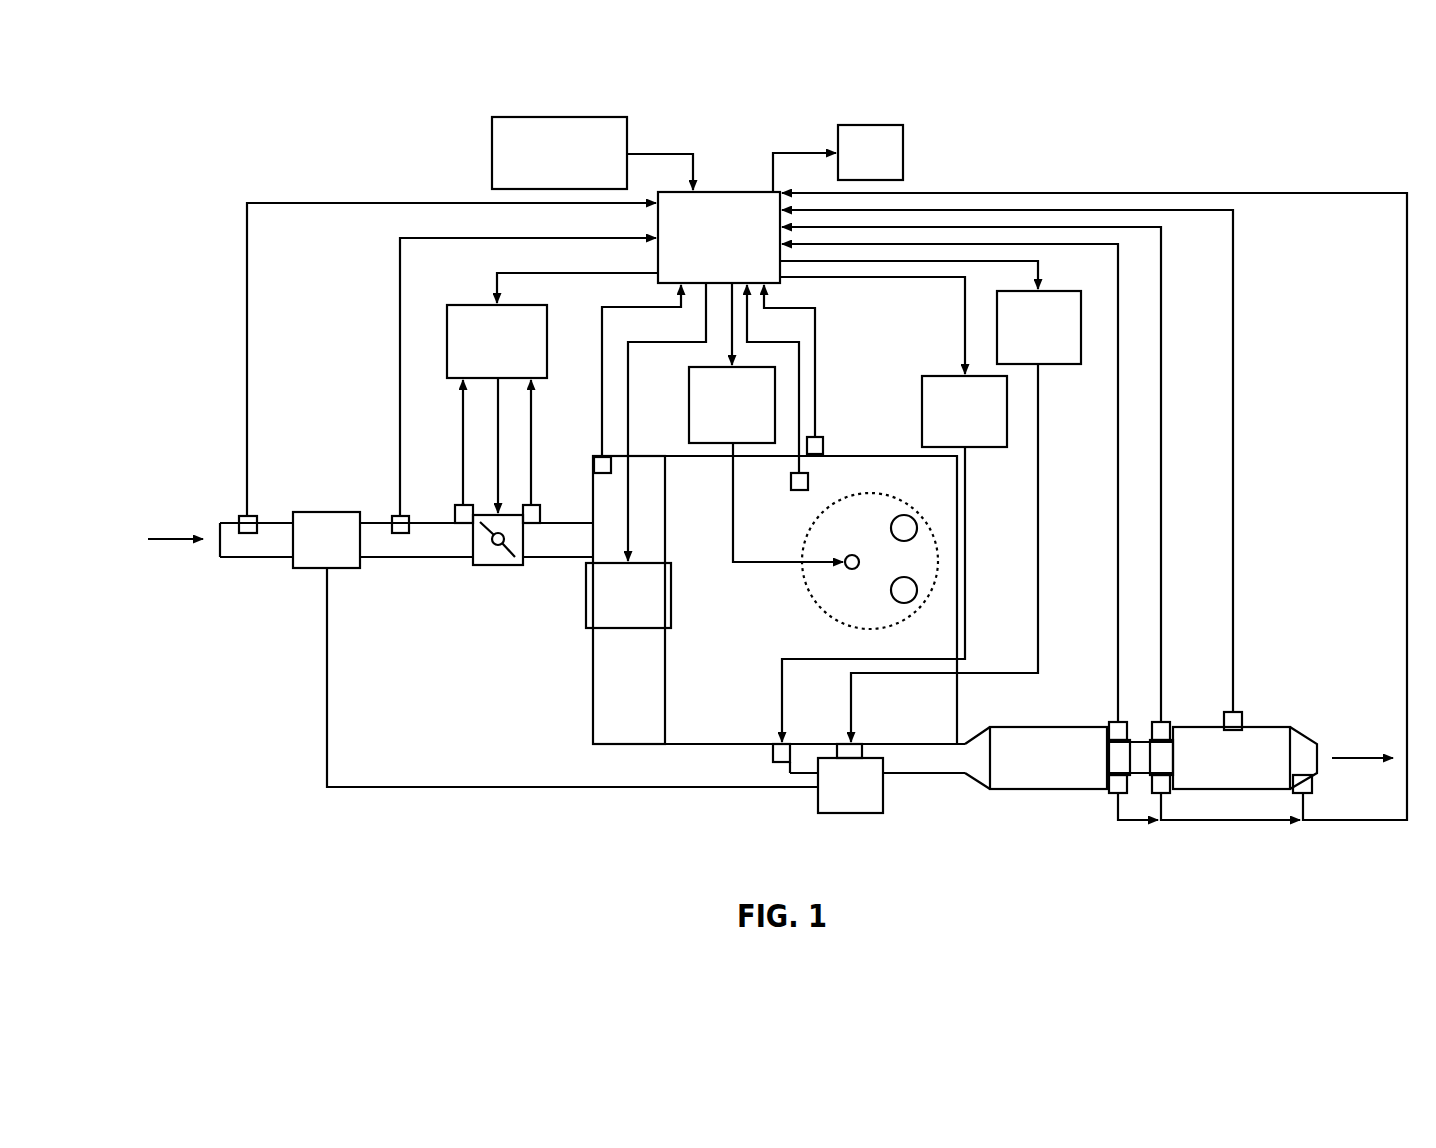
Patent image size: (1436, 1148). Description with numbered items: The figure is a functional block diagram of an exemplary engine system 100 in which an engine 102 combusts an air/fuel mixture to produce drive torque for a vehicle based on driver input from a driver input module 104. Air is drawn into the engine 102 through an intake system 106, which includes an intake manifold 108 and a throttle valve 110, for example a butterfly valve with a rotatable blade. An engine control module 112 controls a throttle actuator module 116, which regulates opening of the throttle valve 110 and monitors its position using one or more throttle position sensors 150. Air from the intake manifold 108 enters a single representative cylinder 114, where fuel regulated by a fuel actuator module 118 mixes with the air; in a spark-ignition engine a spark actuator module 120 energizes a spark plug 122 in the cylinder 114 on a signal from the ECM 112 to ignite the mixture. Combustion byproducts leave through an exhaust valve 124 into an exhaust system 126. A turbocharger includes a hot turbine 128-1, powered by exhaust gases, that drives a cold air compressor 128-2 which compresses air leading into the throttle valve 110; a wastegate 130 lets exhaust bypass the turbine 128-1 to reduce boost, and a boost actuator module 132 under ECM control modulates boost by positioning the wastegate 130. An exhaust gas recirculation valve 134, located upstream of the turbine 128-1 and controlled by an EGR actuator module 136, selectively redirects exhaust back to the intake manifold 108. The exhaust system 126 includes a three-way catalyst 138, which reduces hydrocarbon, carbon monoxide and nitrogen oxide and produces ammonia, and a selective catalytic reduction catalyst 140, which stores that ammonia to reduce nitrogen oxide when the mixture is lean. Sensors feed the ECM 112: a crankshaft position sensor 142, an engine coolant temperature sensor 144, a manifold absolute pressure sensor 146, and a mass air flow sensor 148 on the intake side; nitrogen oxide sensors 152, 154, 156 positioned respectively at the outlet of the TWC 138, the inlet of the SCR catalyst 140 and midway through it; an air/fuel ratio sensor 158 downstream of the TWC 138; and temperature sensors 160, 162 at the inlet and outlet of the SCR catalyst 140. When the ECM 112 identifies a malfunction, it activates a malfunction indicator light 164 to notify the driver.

The engine system 100 is at (218, 110).
The engine 102 is at (855, 456).
The driver input module 104 is at (492, 150).
The intake system 106 is at (274, 642).
The intake manifold 108 is at (593, 681).
The throttle valve 110 is at (500, 565).
The engine control module 112 is at (717, 192).
The cylinder 114 is at (831, 623).
The throttle actuator module 116 is at (471, 305).
The fuel actuator module 118 is at (645, 628).
The spark actuator module 120 is at (689, 392).
The spark plug 122 is at (852, 555).
The exhaust valve 124 is at (904, 603).
The exhaust system 126 is at (1336, 858).
The turbine 128-1 is at (883, 790).
The cold air compressor 128-2 is at (311, 568).
The wastegate 130 is at (855, 744).
The boost actuator module 132 is at (1060, 364).
The exhaust gas recirculation valve 134 is at (780, 762).
The EGR actuator module 136 is at (985, 447).
The three-way catalyst 138 is at (1050, 727).
The selective catalytic reduction catalyst 140 is at (1270, 727).
The crankshaft position sensor 142 is at (820, 435).
The engine coolant temperature sensor 144 is at (799, 490).
The manifold absolute pressure sensor 146 is at (594, 457).
The mass air flow sensor 148 is at (392, 516).
The throttle position sensors 150 is at (462, 524).
The nitrogen oxide sensor 152 is at (239, 516).
The nitrogen oxide sensor 154 is at (1168, 722).
The nitrogen oxide sensor 156 is at (1240, 712).
The air/fuel ratio sensor 158 is at (1110, 793).
The temperature sensor 160 is at (1168, 793).
The temperature sensor 162 is at (1312, 793).
The malfunction indicator light 164 is at (903, 153).